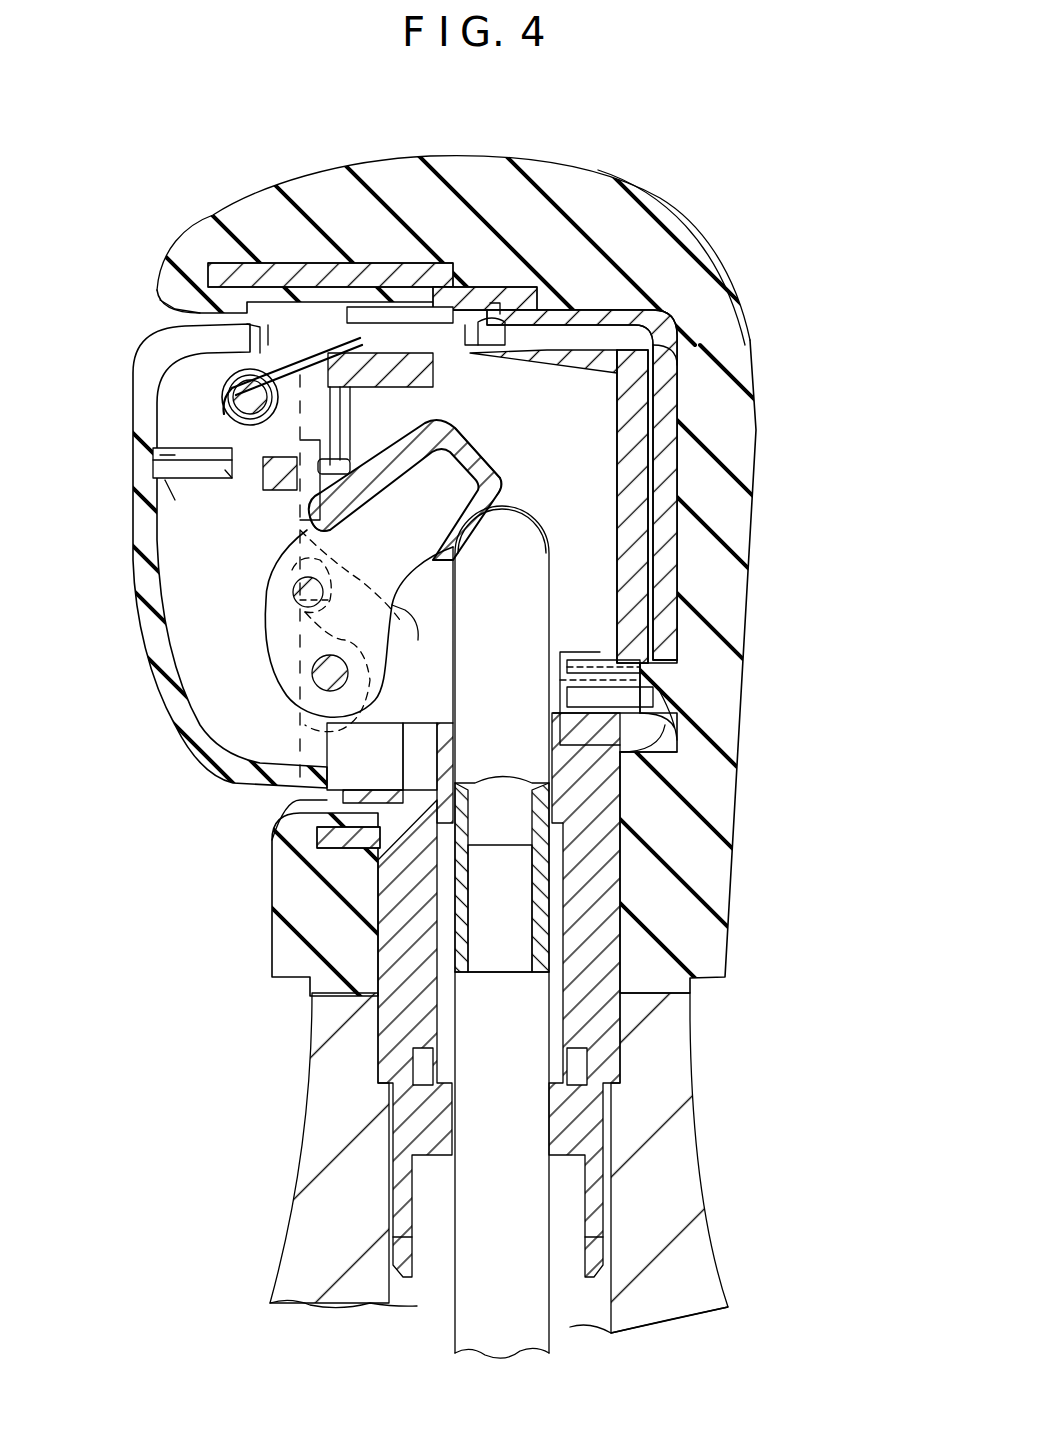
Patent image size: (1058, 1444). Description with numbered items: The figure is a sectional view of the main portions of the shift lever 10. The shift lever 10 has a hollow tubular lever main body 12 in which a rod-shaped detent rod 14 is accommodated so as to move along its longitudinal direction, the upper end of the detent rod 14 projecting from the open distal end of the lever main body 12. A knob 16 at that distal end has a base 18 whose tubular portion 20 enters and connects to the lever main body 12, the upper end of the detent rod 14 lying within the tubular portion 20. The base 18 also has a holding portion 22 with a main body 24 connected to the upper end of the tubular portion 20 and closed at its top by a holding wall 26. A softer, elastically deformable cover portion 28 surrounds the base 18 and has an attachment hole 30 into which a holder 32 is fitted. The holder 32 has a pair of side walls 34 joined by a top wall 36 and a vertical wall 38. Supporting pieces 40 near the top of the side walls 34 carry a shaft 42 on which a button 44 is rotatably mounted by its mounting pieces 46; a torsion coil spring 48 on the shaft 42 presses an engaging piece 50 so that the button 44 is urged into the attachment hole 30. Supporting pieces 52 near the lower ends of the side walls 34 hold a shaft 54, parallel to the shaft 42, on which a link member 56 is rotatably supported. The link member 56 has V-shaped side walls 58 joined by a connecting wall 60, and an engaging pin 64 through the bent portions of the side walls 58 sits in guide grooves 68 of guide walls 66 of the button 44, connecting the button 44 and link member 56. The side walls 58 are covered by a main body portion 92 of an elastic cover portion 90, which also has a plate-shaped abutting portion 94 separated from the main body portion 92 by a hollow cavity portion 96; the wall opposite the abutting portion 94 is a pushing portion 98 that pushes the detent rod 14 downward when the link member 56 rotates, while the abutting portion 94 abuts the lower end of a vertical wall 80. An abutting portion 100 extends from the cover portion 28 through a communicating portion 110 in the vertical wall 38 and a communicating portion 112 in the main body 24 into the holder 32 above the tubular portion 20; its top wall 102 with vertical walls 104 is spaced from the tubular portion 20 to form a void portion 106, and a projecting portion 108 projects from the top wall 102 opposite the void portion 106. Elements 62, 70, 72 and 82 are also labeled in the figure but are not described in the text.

The shift lever 10 is at (225, 152).
The lever main body 12 is at (303, 1110).
The detent rod 14 is at (455, 1347).
The knob 16 is at (700, 223).
The base 18 is at (690, 480).
The tubular portion 20 is at (377, 1033).
The holding portion 22 is at (683, 537).
The main body 24 is at (665, 607).
The holding wall 26 is at (450, 285).
The cover portion 28 is at (732, 277).
The attachment hole 30 is at (185, 320).
The holder 32 is at (655, 434).
The side walls 34 is at (660, 570).
The top wall 36 is at (572, 325).
The vertical wall 38 is at (660, 655).
The supporting pieces 40 is at (270, 350).
The shaft 42 is at (220, 393).
The button 44 is at (160, 478).
The mounting pieces 46 is at (304, 356).
The torsion coil spring 48 is at (212, 470).
The engaging piece 50 is at (169, 487).
The supporting pieces 52 is at (285, 665).
The shaft 54 is at (303, 667).
The link member 56 is at (470, 443).
The side walls 58 is at (500, 492).
The connecting wall 60 is at (447, 478).
The lever surface 62 is at (500, 470).
The engaging pin 64 is at (292, 592).
The guide walls 66 is at (158, 635).
The guide grooves 68 is at (300, 617).
The latch 70 is at (530, 308).
The latch hook 72 is at (478, 318).
The vertical wall 80 is at (324, 435).
The block 82 is at (366, 393).
The cover portion 90 is at (408, 573).
The main body portion 92 is at (332, 532).
The abutting portion 94 is at (322, 470).
The hollow cavity portion 96 is at (427, 535).
The pushing portion 98 is at (545, 533).
The abutting portion 100 is at (603, 650).
The top wall 102 is at (660, 693).
The vertical walls 104 is at (655, 722).
The void portion 106 is at (560, 700).
The projecting portion 108 is at (581, 658).
The communicating portion 110 is at (660, 752).
The communicating portion 112 is at (660, 672).